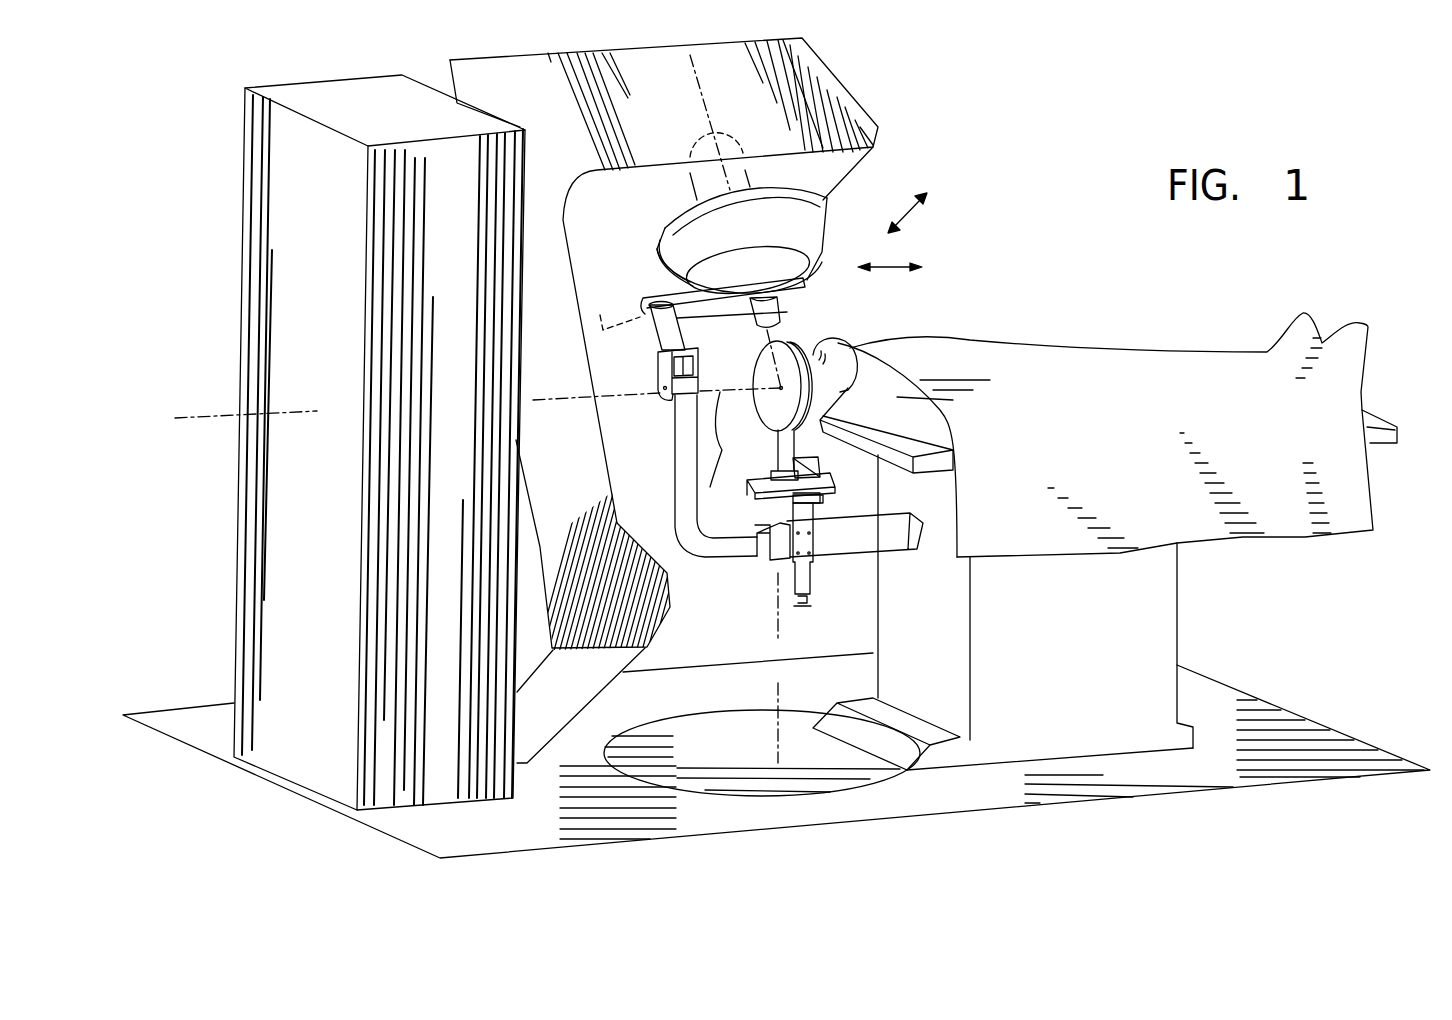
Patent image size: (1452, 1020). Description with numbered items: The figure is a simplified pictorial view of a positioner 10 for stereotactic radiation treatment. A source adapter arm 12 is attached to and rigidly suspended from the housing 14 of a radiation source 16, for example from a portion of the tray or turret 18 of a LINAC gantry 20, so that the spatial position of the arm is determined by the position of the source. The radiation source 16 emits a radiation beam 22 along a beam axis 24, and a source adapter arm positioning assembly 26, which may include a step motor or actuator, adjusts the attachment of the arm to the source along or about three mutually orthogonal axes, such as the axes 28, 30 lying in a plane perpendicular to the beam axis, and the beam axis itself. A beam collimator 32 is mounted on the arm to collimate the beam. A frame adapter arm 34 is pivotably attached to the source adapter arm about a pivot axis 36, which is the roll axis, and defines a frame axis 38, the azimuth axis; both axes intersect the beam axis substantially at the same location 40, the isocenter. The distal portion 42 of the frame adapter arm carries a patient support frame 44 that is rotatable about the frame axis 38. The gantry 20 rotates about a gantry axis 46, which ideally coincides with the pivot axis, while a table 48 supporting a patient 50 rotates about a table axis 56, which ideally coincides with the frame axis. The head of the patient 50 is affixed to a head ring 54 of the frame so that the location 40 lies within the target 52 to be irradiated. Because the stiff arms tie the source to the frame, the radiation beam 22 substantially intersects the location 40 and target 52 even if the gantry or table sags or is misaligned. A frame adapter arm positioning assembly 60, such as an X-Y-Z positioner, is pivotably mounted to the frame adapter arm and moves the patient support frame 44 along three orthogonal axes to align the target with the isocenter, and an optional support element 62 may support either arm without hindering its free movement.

The positioner 10 is at (655, 420).
The source adapter arm 12 is at (658, 348).
The housing 14 is at (838, 173).
The radiation source 16 is at (737, 150).
The tray or turret 18 is at (822, 228).
The LINAC gantry 20 is at (818, 72).
The radiation beam 22 is at (760, 336).
The beam axis 24 is at (698, 92).
The source adapter arm positioning assembly 26 is at (795, 310).
The axis 28 is at (893, 267).
The axis 30 is at (917, 210).
The beam collimator 32 is at (656, 247).
The frame adapter arm 34 is at (683, 465).
The pivot axis 36 is at (718, 444).
The frame axis 38 is at (777, 606).
The location 40 is at (777, 395).
The distal portion 42 is at (740, 553).
The patient support frame 44 is at (833, 468).
The gantry axis 46 is at (213, 425).
The table 48 is at (1392, 445).
The patient 50 is at (1005, 348).
The target 52 is at (776, 386).
The head ring 54 is at (835, 345).
The table axis 56 is at (778, 736).
The frame adapter arm positioning assembly 60 is at (818, 520).
The support element 62 is at (890, 515).